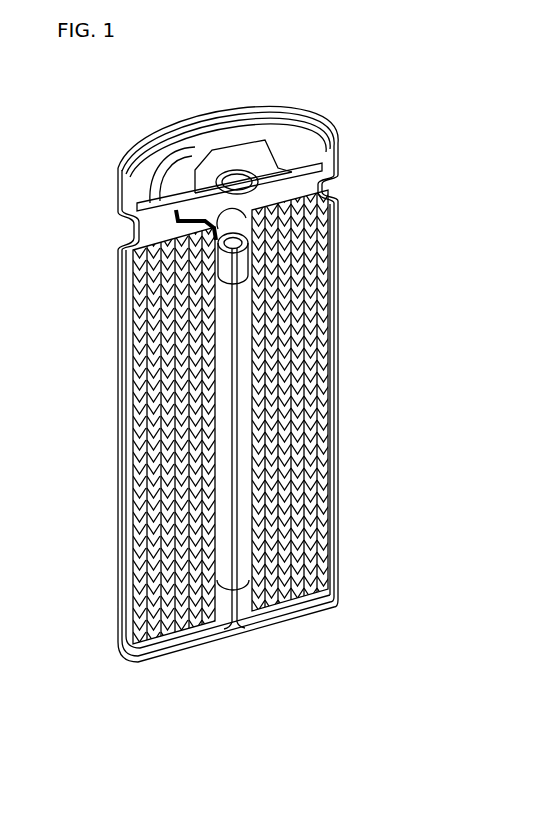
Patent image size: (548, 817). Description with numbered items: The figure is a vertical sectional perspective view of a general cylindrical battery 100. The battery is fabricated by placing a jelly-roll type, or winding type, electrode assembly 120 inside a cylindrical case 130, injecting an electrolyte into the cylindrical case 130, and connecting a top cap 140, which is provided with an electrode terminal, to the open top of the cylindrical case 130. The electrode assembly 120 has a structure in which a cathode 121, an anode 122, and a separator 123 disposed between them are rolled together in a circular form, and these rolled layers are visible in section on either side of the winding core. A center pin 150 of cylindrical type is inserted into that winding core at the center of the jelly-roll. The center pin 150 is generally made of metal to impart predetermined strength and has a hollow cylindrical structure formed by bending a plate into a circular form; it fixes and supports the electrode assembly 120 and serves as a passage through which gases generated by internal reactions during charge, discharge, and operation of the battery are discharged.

The cylindrical battery 100 is at (100, 130).
The electrode assembly 120 is at (273, 448).
The cathode 121 is at (365, 425).
The anode 122 is at (305, 600).
The separator 123 is at (292, 603).
The cylindrical case 130 is at (338, 363).
The top cap 140 is at (345, 138).
The center pin 150 is at (210, 425).